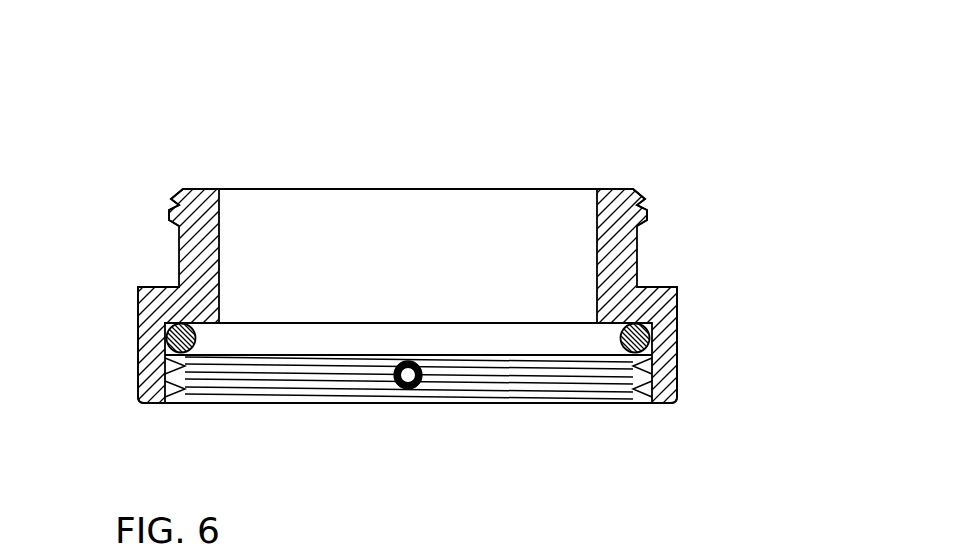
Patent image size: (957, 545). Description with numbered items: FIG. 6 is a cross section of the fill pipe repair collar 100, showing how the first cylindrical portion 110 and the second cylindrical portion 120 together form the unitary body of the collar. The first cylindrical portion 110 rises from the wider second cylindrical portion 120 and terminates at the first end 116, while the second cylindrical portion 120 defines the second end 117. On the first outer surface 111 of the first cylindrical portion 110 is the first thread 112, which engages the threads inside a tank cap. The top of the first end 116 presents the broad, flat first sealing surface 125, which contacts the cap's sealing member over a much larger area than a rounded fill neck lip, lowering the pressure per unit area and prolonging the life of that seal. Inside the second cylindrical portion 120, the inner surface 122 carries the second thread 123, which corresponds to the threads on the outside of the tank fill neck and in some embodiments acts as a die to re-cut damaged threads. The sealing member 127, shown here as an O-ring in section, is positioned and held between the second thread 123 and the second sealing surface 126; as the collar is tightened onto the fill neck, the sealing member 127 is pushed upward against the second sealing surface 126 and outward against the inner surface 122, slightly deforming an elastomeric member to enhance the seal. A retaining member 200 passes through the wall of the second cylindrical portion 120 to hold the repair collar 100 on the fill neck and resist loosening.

The repair collar 100 is at (156, 85).
The first cylindrical portion 110 is at (612, 242).
The first outer surface 111 is at (180, 257).
The first thread 112 is at (176, 205).
The first end 116 is at (665, 197).
The second end 117 is at (696, 393).
The second cylindrical portion 120 is at (667, 313).
The inner surface 122 is at (478, 385).
The second thread 123 is at (205, 380).
The first sealing surface 125 is at (617, 190).
The second sealing surface 126 is at (612, 362).
The sealing member 127 is at (405, 337).
The retaining member 200 is at (405, 390).